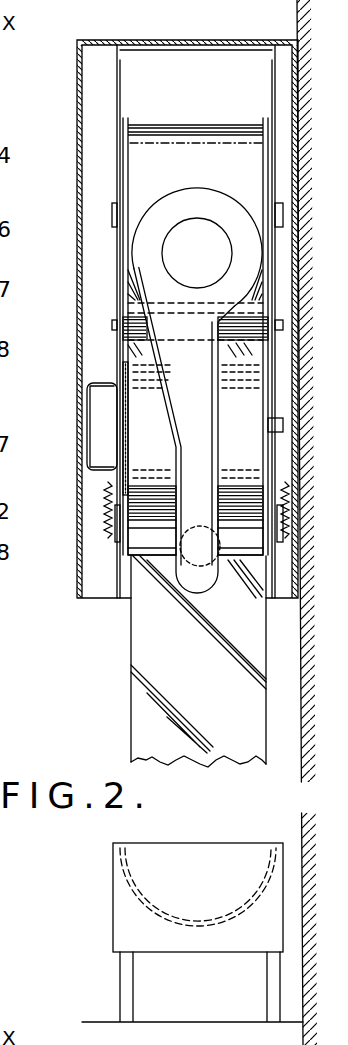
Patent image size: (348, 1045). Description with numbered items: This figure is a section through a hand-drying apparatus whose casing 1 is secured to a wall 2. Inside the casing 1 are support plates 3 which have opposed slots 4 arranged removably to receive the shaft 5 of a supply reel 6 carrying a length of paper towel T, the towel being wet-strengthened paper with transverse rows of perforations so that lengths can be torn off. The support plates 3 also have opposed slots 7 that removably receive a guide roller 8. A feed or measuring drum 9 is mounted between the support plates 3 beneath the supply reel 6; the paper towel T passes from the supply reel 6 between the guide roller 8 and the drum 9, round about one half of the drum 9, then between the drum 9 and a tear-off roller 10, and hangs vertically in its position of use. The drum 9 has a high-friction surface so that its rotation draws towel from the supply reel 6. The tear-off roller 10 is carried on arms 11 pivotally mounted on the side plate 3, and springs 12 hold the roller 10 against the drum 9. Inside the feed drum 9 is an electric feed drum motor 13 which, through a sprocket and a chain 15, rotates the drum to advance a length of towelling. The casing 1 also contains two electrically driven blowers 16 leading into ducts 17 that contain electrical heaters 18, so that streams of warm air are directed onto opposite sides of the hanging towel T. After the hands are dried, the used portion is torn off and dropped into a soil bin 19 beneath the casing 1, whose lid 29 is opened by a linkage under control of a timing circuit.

The casing 1 is at (77, 78).
The wall 2 is at (296, 77).
The support plates 3 is at (270, 92).
The opposed slots 4 is at (5, 155).
The shaft 5 is at (113, 213).
The supply reel 6 is at (125, 152).
The opposed slots 7 is at (5, 289).
The guide roller 8 is at (128, 335).
The feed or measuring drum 9 is at (122, 511).
The tear-off roller 10 is at (131, 555).
The arms 11 is at (283, 542).
The springs 12 is at (108, 503).
The electric feed drum motor 13 is at (103, 430).
The chain 15 is at (125, 476).
The electrically driven blowers 16 is at (194, 235).
The ducts 17 is at (184, 430).
The electrical heaters 18 is at (212, 592).
The soil bin 19 is at (132, 920).
The lid 29 is at (157, 871).
The paper towel T is at (180, 705).